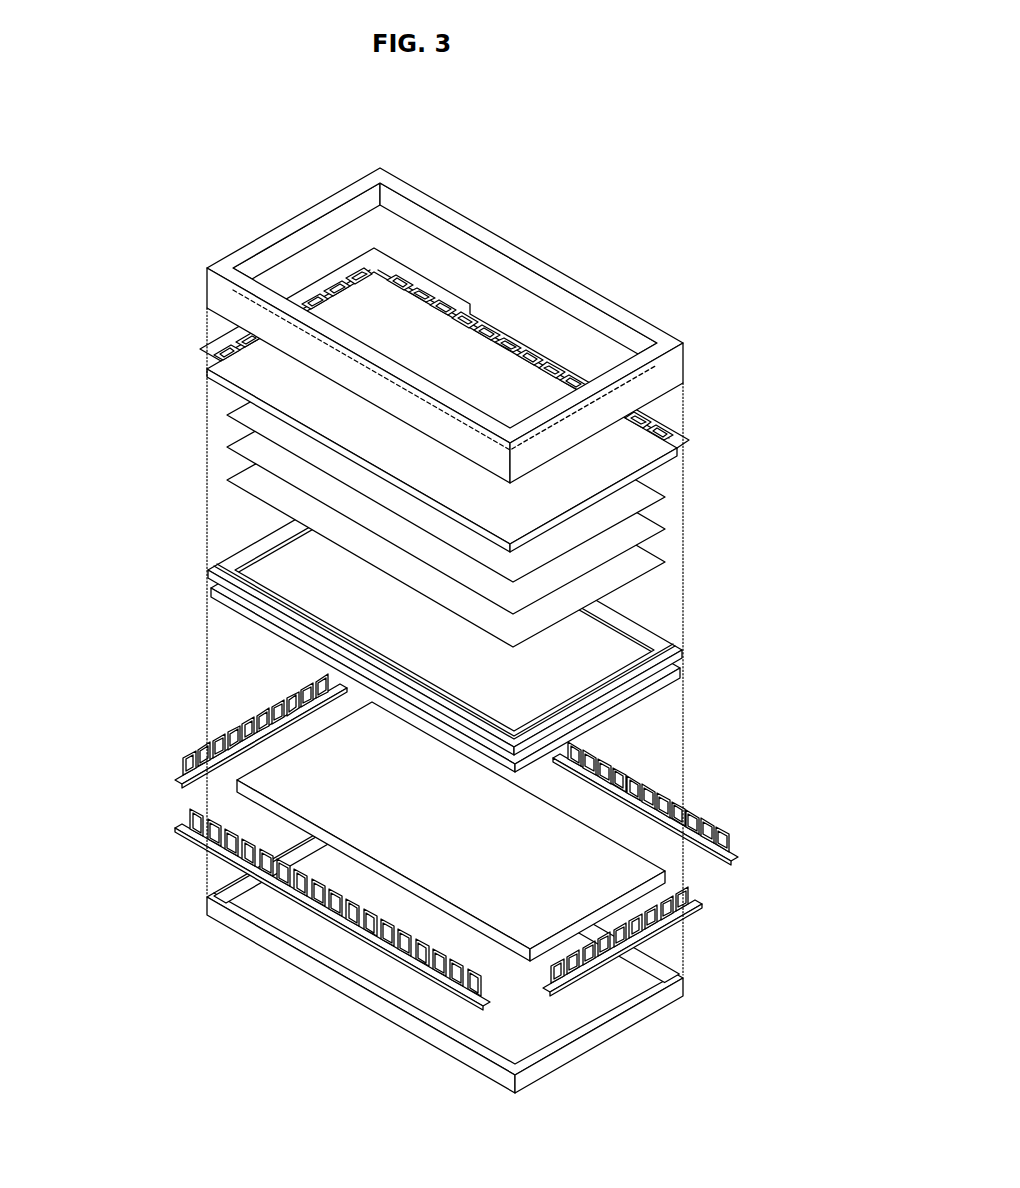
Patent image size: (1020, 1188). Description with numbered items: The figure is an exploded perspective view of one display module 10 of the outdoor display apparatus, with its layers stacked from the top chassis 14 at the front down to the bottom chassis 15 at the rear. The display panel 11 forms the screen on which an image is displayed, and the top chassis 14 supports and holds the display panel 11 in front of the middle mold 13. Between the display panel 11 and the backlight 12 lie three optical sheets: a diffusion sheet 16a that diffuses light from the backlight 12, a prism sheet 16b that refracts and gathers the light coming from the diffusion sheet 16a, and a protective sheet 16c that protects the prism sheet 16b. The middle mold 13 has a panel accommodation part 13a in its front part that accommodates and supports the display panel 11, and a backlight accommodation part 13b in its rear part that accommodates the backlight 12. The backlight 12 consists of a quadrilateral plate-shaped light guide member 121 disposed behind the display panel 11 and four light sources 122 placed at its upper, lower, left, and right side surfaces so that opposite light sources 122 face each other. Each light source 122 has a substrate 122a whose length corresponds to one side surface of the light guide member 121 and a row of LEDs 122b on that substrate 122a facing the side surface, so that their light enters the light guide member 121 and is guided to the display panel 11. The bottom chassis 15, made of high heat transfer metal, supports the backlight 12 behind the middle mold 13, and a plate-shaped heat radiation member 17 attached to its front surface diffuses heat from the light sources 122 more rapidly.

The display module 10 is at (580, 145).
The display panel 11 is at (641, 453).
The backlight 12 is at (466, 842).
The middle mold 13 is at (492, 622).
The panel accommodation part 13a is at (662, 632).
The backlight accommodation part 13b is at (666, 681).
The top chassis 14 is at (687, 337).
The bottom chassis 15 is at (468, 946).
The diffusion sheet 16a is at (639, 561).
The prism sheet 16b is at (639, 527).
The protective sheet 16c is at (639, 494).
The heat radiation member 17 is at (578, 1020).
The light guide member 121 is at (664, 877).
The light source 122 is at (460, 842).
The substrate 122a is at (702, 828).
The LED 122b is at (634, 766).